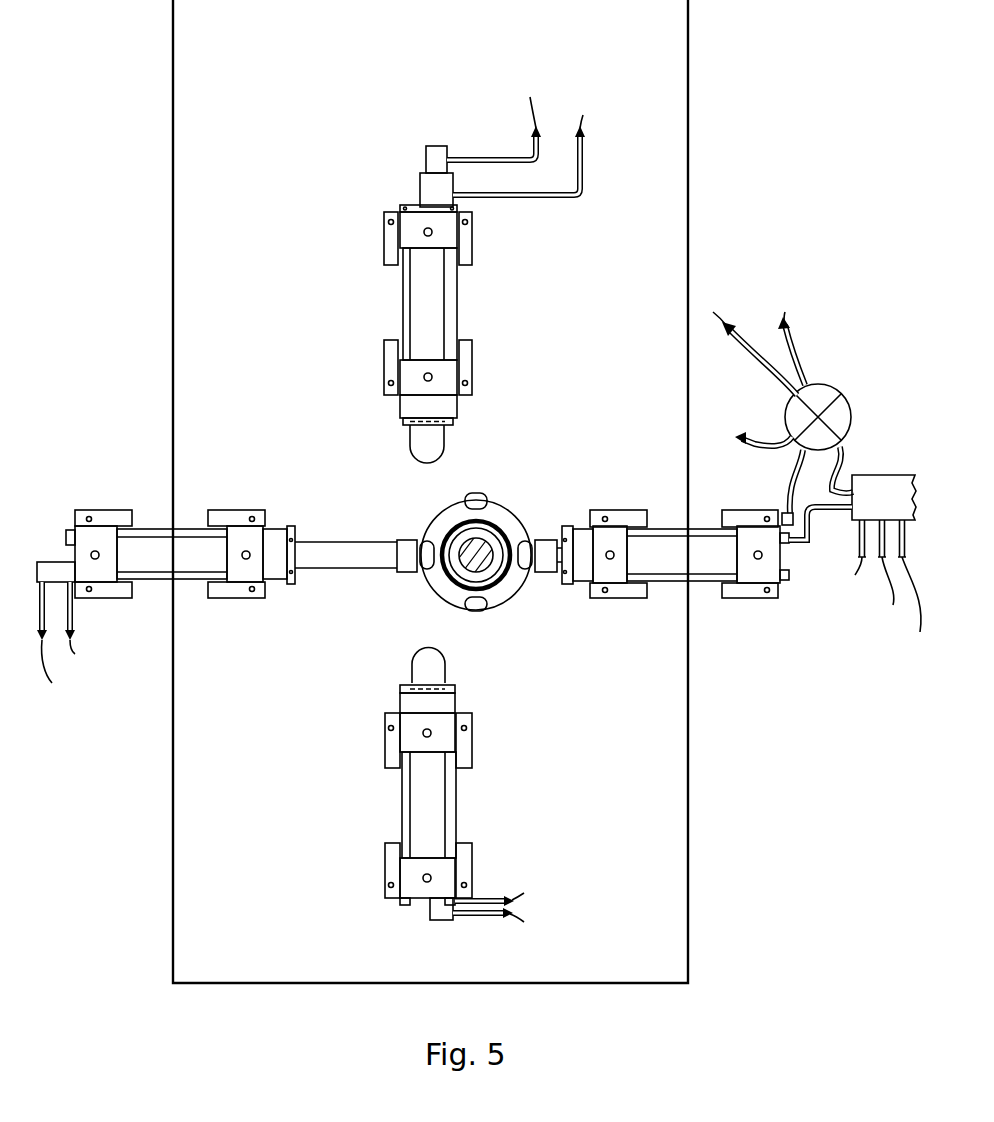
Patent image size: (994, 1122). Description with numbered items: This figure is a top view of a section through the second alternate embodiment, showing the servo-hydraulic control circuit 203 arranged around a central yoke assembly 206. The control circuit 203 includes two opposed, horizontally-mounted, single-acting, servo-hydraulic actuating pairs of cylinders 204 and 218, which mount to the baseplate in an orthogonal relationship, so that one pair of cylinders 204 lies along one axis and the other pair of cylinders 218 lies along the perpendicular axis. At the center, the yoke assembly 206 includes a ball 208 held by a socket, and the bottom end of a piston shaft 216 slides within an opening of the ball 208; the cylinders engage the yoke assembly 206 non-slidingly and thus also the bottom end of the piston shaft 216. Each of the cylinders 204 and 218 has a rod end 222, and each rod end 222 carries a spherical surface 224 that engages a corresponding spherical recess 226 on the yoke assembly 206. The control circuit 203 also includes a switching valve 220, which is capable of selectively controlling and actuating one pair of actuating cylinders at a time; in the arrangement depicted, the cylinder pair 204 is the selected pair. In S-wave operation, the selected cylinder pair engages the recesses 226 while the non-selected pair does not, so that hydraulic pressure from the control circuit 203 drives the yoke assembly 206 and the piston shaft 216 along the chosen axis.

The servo-hydraulic control circuit 203 is at (876, 462).
The actuating cylinders 204 is at (187, 583).
The yoke assembly 206 is at (530, 603).
The ball 208 is at (437, 594).
The piston shaft 216 is at (515, 516).
The actuating cylinders 218 is at (457, 293).
The switching valve 220 is at (838, 381).
The rod ends 222 is at (445, 435).
The spherical surface 224 is at (437, 463).
The spherical recesses 226 is at (487, 493).